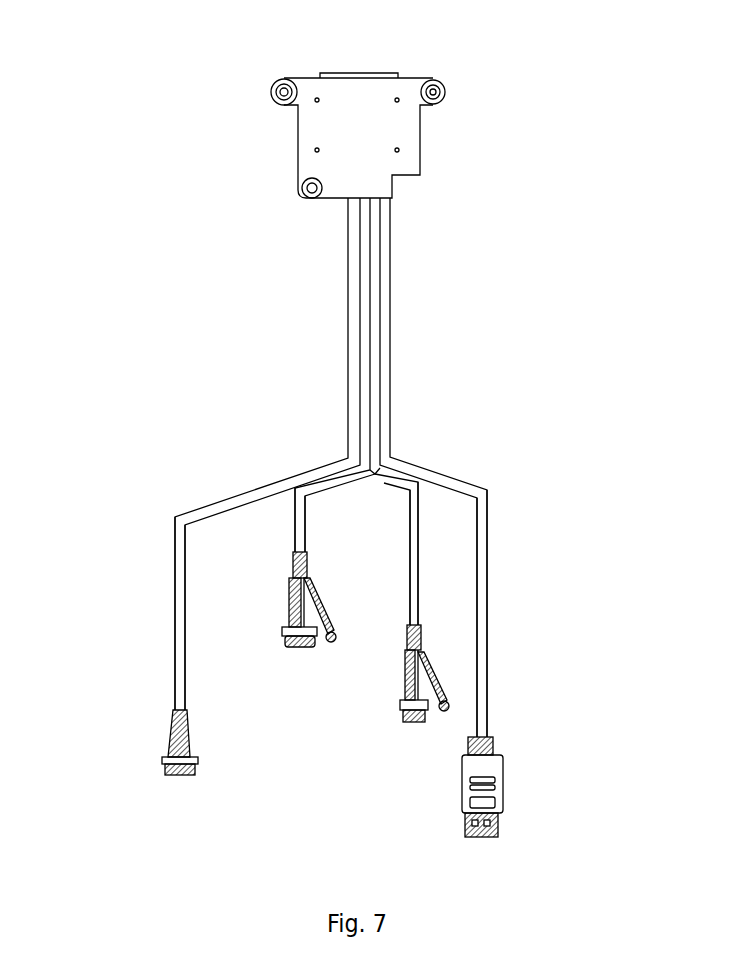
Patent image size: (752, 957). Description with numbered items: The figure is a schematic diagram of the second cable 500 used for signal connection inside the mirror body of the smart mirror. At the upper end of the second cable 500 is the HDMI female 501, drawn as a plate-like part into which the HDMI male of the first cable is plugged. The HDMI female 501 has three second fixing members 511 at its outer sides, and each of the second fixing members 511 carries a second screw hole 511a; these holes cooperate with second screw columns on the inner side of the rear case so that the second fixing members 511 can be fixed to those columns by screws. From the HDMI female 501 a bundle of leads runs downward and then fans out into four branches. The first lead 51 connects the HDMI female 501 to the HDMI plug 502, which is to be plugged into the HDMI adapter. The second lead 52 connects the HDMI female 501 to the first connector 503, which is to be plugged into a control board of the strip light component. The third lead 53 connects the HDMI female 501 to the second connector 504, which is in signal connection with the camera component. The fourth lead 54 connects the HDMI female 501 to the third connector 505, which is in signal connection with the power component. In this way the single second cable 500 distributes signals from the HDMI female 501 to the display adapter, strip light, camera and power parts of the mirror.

The second cable 500 is at (490, 320).
The HDMI female 501 is at (358, 80).
The second fixing members 511 is at (435, 79).
The second screw holes 511a is at (445, 87).
The first lead 51 is at (483, 577).
The second lead 52 is at (440, 510).
The third lead 53 is at (297, 530).
The fourth lead 54 is at (177, 608).
The HDMI plug 502 is at (493, 807).
The first connector 503 is at (425, 717).
The second connector 504 is at (316, 648).
The third connector 505 is at (158, 758).